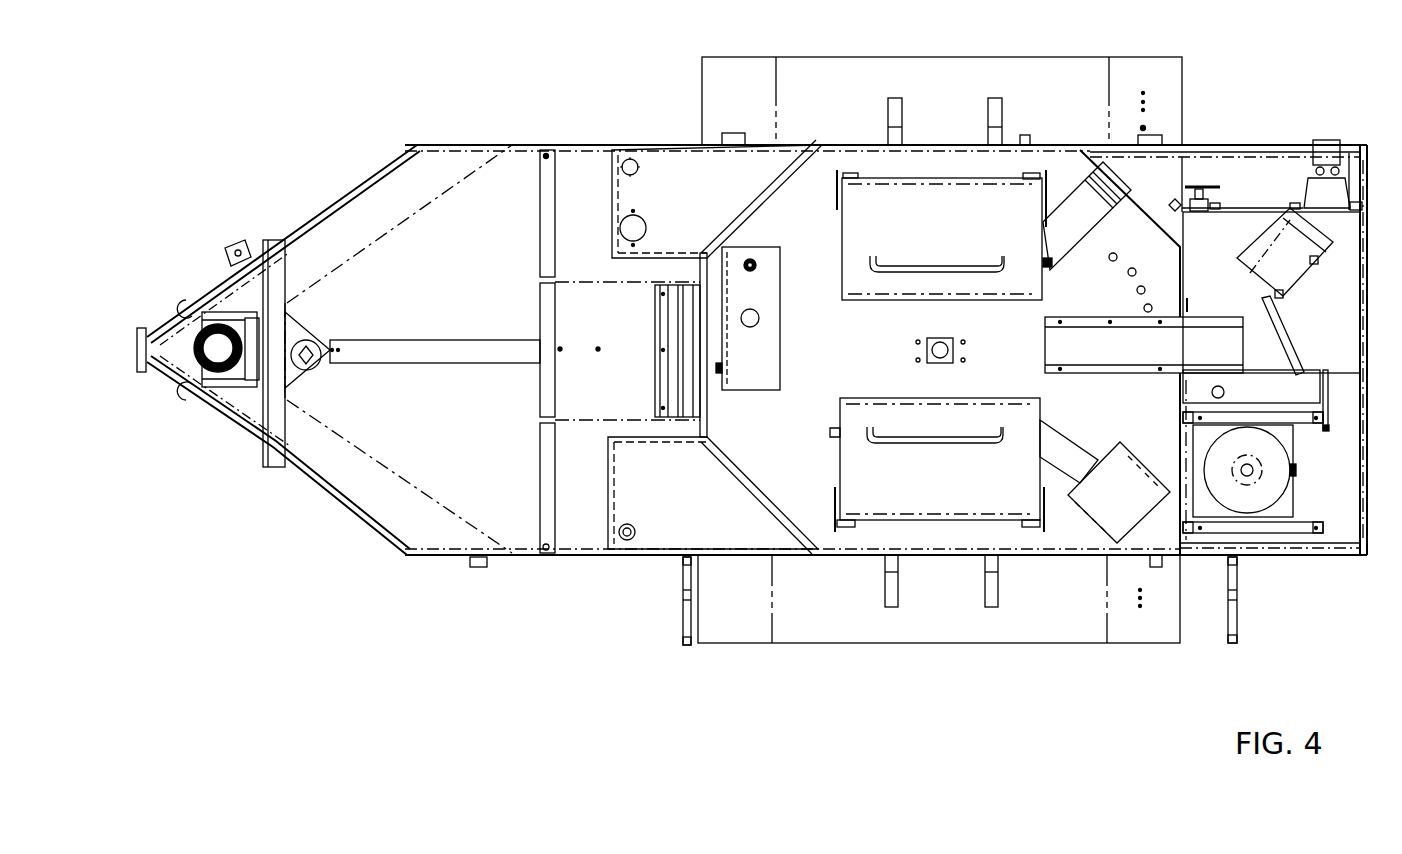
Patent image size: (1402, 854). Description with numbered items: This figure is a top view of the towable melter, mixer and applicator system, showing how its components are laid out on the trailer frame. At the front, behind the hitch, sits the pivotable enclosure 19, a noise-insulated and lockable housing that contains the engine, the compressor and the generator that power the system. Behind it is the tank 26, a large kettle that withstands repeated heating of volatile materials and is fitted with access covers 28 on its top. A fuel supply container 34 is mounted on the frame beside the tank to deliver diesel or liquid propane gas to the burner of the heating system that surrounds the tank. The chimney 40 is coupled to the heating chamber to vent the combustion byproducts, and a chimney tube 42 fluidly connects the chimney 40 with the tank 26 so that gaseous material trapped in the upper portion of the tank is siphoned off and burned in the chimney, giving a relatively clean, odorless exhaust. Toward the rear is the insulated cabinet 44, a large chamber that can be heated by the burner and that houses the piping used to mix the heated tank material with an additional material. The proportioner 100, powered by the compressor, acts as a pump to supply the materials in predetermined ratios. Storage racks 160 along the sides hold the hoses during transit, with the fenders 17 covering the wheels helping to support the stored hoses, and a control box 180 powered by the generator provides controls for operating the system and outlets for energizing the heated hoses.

The fenders 17 is at (961, 111).
The pivotable enclosure 19 is at (456, 302).
The tank 26 is at (866, 365).
The access covers 28 is at (956, 235).
The fuel supply container 34 is at (691, 512).
The chimney 40 is at (1133, 509).
The chimney tube 42 is at (1068, 447).
The insulated cabinet 44 is at (1351, 327).
The proportioner 100 is at (1262, 500).
The storage racks 160 is at (680, 603).
The control box 180 is at (1297, 250).